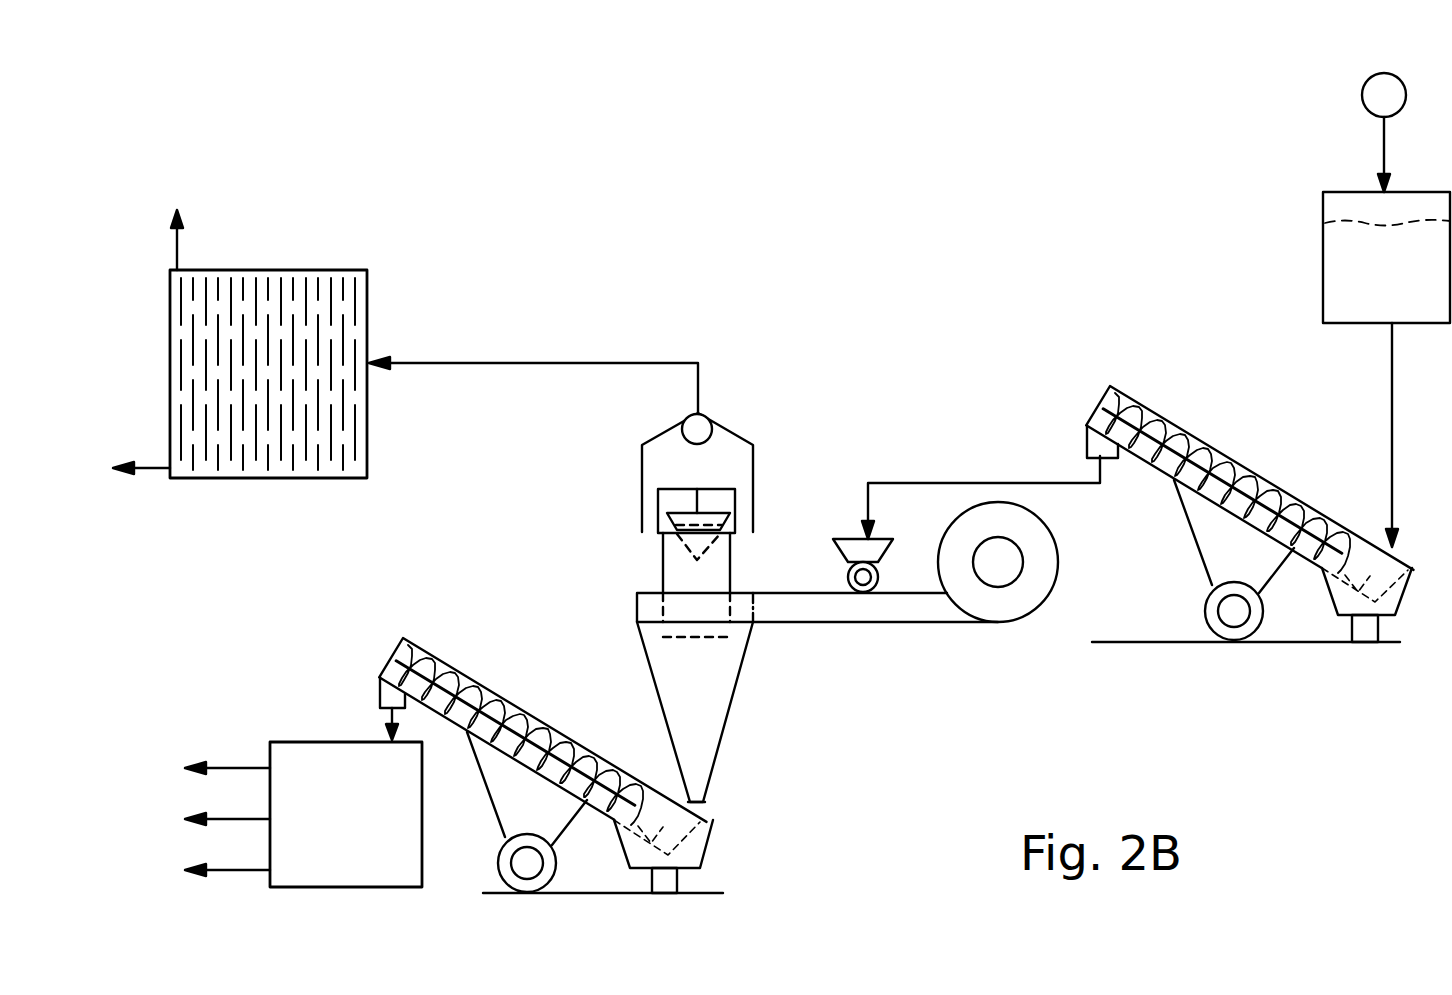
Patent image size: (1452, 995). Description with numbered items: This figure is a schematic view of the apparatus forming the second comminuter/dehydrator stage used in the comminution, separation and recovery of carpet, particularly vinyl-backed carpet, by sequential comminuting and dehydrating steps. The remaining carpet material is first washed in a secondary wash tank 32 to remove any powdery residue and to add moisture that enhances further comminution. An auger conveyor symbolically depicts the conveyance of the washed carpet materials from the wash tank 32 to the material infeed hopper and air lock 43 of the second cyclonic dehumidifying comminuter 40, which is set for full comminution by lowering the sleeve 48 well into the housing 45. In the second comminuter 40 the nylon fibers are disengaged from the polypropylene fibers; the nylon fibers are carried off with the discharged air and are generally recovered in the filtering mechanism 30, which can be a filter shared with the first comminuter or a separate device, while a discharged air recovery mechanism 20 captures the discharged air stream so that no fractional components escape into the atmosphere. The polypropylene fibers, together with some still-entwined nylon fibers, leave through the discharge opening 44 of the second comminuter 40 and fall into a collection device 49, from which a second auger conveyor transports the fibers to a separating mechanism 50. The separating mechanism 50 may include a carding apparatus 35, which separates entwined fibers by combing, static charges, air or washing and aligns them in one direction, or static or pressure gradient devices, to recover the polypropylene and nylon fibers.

The discharged air recovery mechanism 20 is at (699, 413).
The filtering mechanism 30 is at (368, 292).
The secondary wash tank 32 is at (1330, 192).
The carding apparatus 35 is at (274, 724).
The second cyclonic dehumidifying comminuter 40 is at (566, 518).
The material infeed hopper and air lock 43 is at (832, 540).
The discharge opening 44 is at (705, 803).
The housing 45 is at (735, 693).
The sleeve 48 is at (663, 568).
The collection device 49 is at (705, 858).
The separating mechanism 50 is at (332, 742).